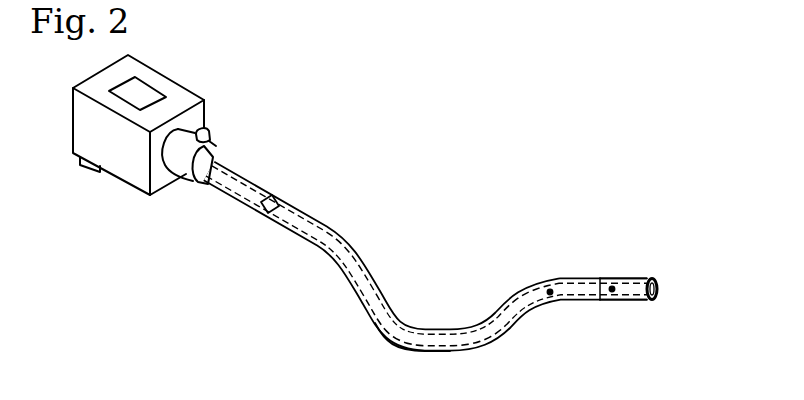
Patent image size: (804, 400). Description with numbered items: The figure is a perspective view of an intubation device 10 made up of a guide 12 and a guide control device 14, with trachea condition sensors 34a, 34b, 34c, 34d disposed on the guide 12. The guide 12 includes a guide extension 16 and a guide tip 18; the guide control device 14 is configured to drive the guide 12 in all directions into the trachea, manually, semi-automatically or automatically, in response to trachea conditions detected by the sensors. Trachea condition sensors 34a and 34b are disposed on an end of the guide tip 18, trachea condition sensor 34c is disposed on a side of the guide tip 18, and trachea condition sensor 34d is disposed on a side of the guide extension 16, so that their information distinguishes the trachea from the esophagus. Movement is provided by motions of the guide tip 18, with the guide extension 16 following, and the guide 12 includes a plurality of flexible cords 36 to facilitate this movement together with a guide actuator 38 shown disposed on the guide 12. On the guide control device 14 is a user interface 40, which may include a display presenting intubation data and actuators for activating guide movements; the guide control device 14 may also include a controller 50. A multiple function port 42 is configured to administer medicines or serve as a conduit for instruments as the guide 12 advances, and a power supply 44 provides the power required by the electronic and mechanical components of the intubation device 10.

The intubation device 10 is at (389, 112).
The guide 12 is at (428, 274).
The guide control device 14 is at (128, 187).
The guide extension 16 is at (427, 353).
The guide tip 18 is at (634, 287).
The trachea condition sensor 34a is at (658, 297).
The trachea condition sensor 34b is at (658, 282).
The trachea condition sensor 34c is at (613, 291).
The trachea condition sensor 34d is at (549, 290).
The flexible cords 36 is at (340, 273).
The guide actuator 38 is at (269, 200).
The user interface 40 is at (144, 96).
The multiple function port 42 is at (210, 130).
The power supply 44 is at (85, 173).
The controller 50 is at (162, 178).